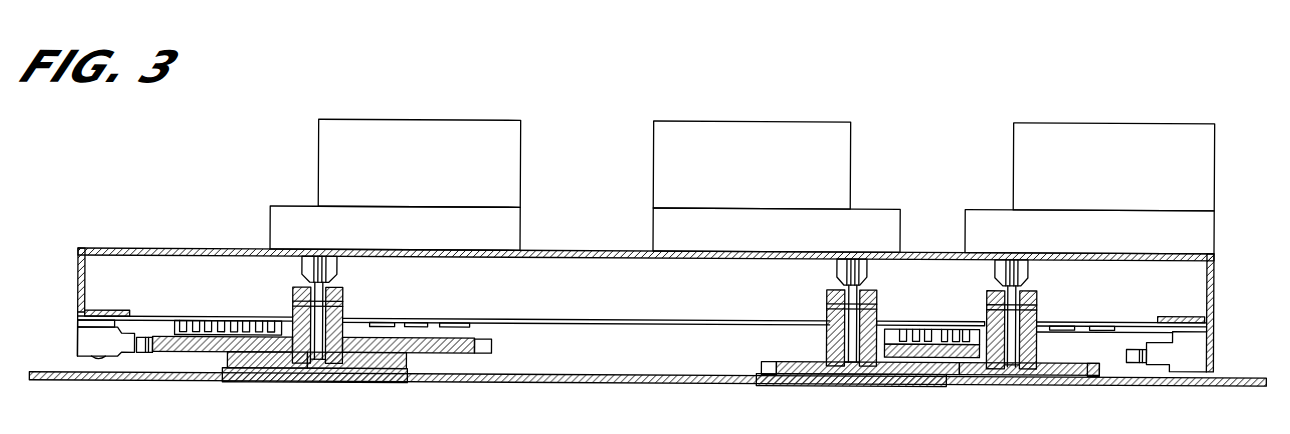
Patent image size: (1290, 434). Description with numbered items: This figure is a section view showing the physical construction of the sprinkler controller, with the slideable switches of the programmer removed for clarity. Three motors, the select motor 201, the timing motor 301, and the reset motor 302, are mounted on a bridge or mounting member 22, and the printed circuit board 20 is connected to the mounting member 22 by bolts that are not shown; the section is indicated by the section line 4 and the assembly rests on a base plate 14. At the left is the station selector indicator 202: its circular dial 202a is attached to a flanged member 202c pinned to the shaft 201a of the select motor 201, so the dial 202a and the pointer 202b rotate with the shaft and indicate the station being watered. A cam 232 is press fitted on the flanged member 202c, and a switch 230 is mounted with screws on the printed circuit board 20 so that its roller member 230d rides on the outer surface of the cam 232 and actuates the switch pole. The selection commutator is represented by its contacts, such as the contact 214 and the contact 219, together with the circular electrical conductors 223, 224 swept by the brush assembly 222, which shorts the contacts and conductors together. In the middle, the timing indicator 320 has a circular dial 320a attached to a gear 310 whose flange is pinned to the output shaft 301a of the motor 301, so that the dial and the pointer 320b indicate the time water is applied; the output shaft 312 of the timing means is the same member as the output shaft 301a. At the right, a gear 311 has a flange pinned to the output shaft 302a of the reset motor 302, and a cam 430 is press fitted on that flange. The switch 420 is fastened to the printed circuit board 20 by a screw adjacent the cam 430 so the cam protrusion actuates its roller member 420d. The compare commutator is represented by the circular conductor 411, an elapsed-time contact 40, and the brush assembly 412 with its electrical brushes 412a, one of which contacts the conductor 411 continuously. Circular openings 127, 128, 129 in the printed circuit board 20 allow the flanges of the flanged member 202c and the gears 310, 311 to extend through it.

The section line 4- 4 is at (78, 322).
The base plate 14 is at (578, 382).
The printed circuit board 20 is at (1122, 282).
The mounting member 22 is at (1212, 300).
The conductor 40 is at (1105, 319).
The circular opening 127 is at (1030, 319).
The circular opening 128 is at (345, 312).
The circular opening 129 is at (828, 316).
The select motor 201 is at (430, 118).
The shaft 201a is at (300, 280).
The station selector indicator 202 is at (329, 387).
The circular dial 202a is at (405, 384).
The pointer 202b is at (224, 368).
The flanged member 202c is at (408, 365).
The contact 214 is at (492, 319).
The contact 219 is at (205, 325).
The brush assembly 222 is at (185, 300).
The circular electrical conductor 223 is at (226, 317).
The circular electrical conductor 224 is at (266, 308).
The switch 230 is at (88, 340).
The roller member 230d is at (142, 355).
The cam 232 is at (493, 347).
The motor 301 is at (733, 118).
The output shaft 301a is at (840, 282).
The reset motor 302 is at (1034, 118).
The output shaft 302a is at (997, 280).
The gear 310 is at (762, 364).
The gear 311 is at (1100, 376).
The output shaft 312 is at (810, 297).
The timing indicator 320 is at (820, 392).
The circular dial 320a is at (930, 383).
The pointer 320b is at (850, 383).
The circular conductor 411 is at (1057, 319).
The brush assembly 412 is at (892, 336).
The electrical brush 412a is at (955, 355).
The switch 420 is at (1185, 352).
The roller member 420d is at (1130, 360).
The cam 430 is at (1081, 337).